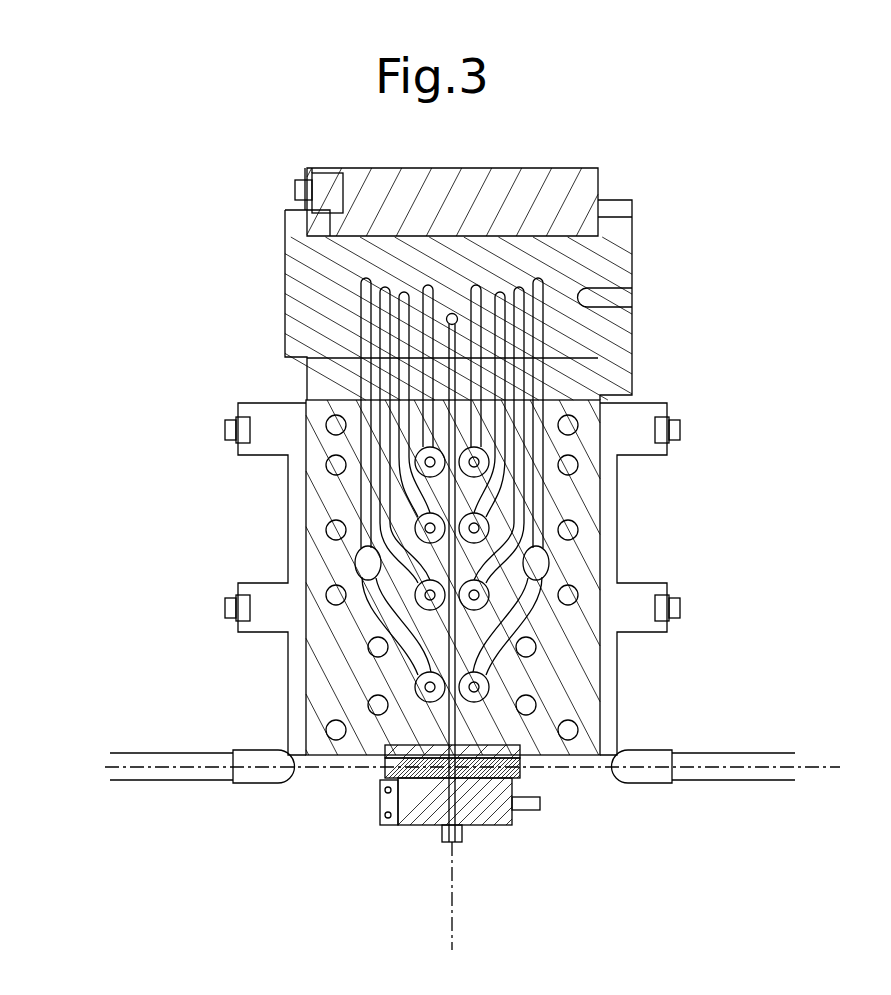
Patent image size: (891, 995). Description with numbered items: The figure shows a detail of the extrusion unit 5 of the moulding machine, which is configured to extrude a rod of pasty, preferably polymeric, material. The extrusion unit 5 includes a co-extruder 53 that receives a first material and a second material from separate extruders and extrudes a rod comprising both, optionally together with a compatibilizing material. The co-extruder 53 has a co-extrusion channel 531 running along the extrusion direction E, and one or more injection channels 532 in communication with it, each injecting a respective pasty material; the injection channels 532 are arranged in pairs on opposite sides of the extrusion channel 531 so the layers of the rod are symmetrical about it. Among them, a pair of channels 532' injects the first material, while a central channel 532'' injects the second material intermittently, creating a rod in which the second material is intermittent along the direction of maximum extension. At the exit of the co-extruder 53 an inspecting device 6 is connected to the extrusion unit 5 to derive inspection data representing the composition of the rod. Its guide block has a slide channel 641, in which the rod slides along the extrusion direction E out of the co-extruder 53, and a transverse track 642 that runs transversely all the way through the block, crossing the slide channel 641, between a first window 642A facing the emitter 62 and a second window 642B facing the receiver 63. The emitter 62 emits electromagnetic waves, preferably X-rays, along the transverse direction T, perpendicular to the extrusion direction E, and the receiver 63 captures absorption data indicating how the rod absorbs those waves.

The extrusion unit 5 is at (632, 173).
The co-extruder 53 is at (632, 564).
The co-extrusion channel 531 is at (452, 728).
The injection channels 532 is at (568, 493).
The pair of channels 532' is at (335, 413).
The central channel 532'' is at (599, 351).
The inspecting device 6 is at (396, 838).
The slide channel 641 is at (450, 790).
The transverse track 642 is at (507, 772).
The first window 642A is at (528, 777).
The second window 642B is at (385, 770).
The emitter 62 is at (645, 775).
The receiver 63 is at (248, 775).
The transverse direction T is at (820, 770).
The extrusion direction E is at (453, 922).